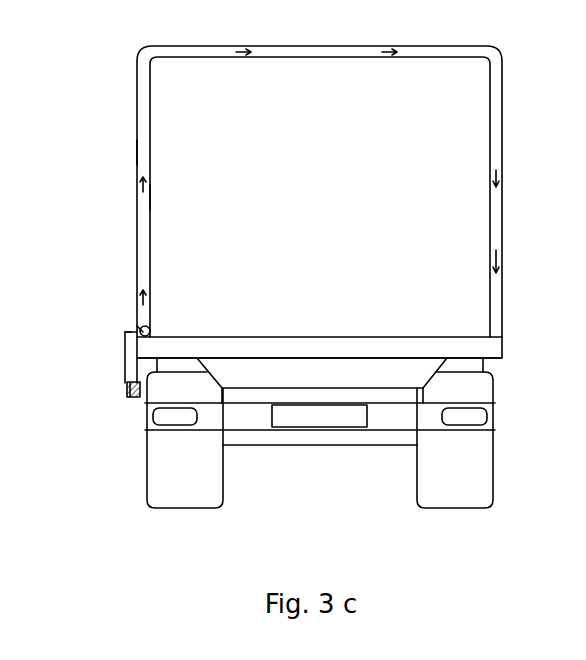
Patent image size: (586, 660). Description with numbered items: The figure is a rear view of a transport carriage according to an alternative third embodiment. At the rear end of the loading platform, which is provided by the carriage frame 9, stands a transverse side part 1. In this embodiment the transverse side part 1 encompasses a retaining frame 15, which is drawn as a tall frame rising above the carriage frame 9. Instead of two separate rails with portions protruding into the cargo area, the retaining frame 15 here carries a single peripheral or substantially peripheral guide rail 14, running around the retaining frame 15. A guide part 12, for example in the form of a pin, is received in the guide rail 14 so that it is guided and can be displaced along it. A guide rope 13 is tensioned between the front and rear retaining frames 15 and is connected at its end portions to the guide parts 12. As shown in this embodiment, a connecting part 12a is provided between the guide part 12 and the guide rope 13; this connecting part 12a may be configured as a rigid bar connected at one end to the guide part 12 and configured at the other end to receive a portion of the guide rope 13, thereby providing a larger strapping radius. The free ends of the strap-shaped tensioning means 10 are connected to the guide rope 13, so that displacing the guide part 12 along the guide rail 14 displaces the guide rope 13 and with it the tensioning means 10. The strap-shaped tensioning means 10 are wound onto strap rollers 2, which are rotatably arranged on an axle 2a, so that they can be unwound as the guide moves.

The transverse side part 1 is at (319, 202).
The strap roller 2 is at (130, 400).
The axle 2a is at (123, 396).
The carriage frame 9 is at (316, 347).
The strap-shaped tensioning means 10 is at (128, 368).
The guide part 12 is at (150, 331).
The connecting part 12a is at (133, 328).
The guide rope 13 is at (125, 330).
The guide rail 14 is at (138, 153).
The retaining frame 15 is at (128, 201).